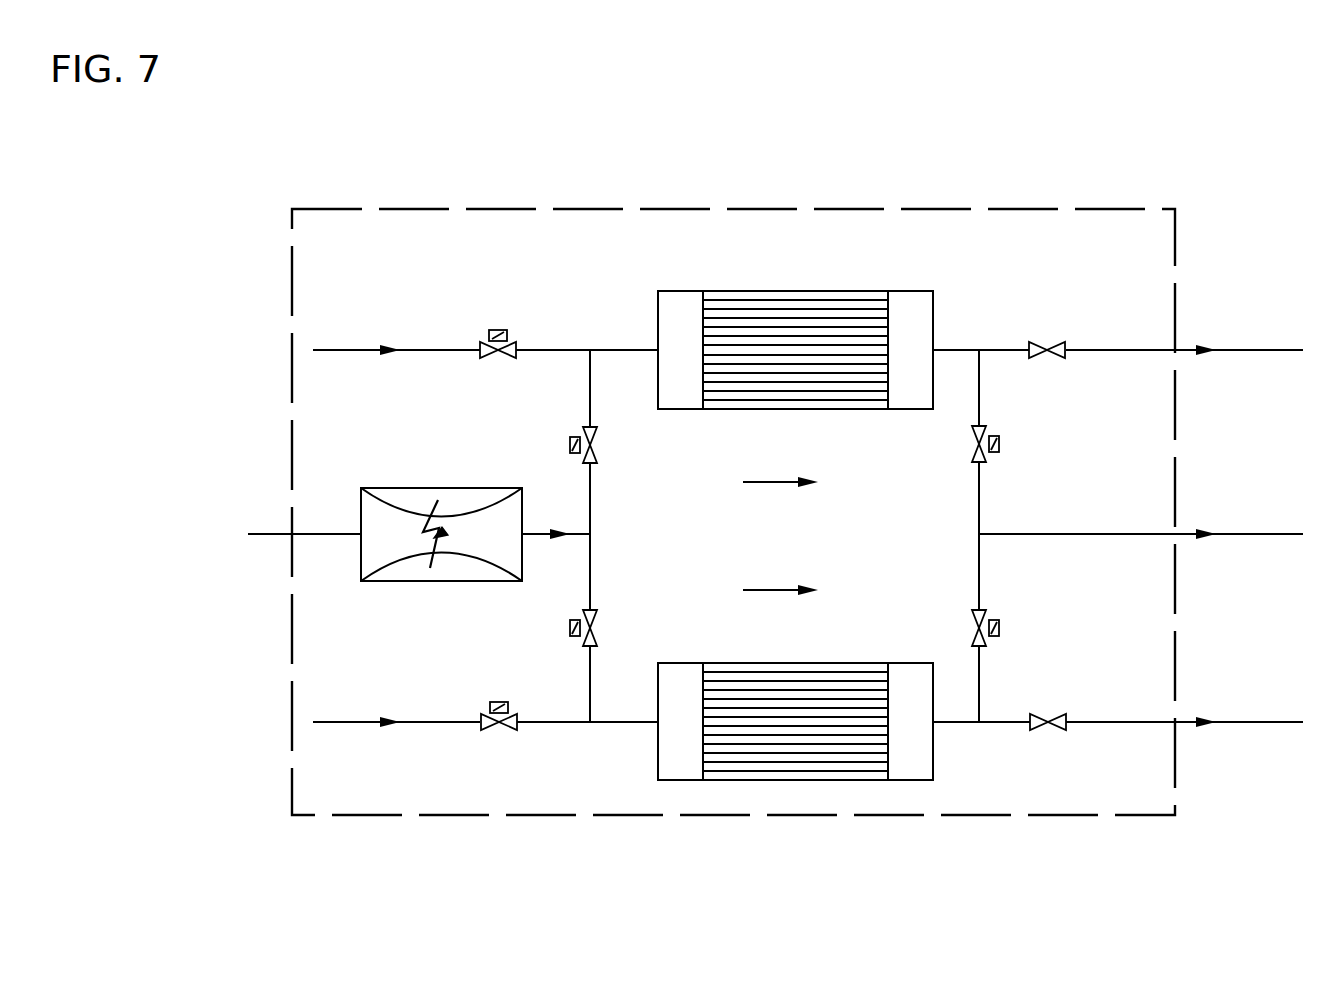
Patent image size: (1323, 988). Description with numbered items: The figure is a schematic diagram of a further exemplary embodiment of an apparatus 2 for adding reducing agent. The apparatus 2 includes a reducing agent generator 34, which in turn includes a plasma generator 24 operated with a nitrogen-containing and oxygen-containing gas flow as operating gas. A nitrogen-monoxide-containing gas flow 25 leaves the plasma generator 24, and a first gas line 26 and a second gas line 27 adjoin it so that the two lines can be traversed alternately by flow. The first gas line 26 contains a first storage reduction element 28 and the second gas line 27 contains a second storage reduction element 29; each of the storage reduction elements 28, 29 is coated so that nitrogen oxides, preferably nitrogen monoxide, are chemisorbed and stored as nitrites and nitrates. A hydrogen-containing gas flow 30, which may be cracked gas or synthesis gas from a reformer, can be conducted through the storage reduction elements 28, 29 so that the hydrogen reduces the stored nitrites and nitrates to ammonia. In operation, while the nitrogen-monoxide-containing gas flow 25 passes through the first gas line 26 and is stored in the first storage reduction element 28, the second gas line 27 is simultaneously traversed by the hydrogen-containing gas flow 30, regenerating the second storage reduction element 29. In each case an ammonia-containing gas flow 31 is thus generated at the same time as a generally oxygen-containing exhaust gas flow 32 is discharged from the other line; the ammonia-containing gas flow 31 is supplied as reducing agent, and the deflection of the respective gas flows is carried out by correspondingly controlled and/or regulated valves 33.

The apparatus for adding reducing agent 2 is at (1145, 816).
The plasma generator 24 is at (407, 565).
The nitrogen-monoxide-containing gas flow 25 is at (533, 537).
The first gas line 26 is at (627, 330).
The second gas line 27 is at (627, 748).
The first storage reduction element 28 is at (877, 322).
The second storage reduction element 29 is at (877, 690).
The hydrogen-containing gas flow 30 is at (328, 352).
The ammonia-containing gas flow 31 is at (1183, 534).
The oxygen-containing exhaust gas flow 32 is at (1180, 352).
The valves 33 is at (496, 345).
The reducing agent generator 34 is at (345, 185).